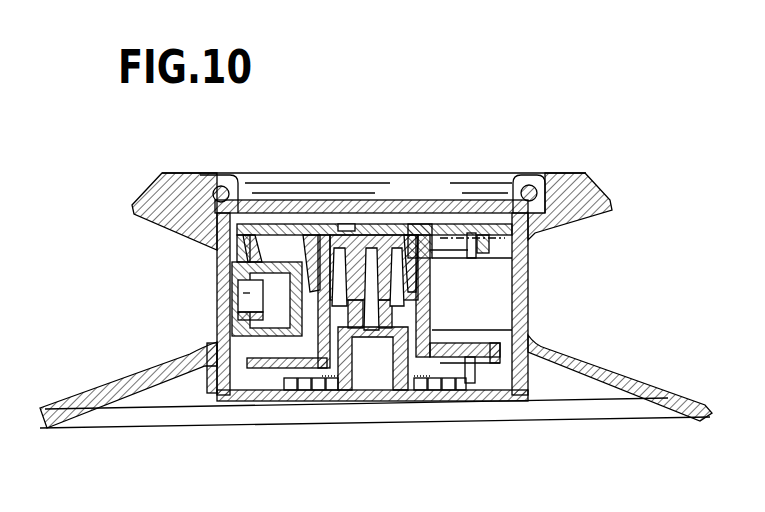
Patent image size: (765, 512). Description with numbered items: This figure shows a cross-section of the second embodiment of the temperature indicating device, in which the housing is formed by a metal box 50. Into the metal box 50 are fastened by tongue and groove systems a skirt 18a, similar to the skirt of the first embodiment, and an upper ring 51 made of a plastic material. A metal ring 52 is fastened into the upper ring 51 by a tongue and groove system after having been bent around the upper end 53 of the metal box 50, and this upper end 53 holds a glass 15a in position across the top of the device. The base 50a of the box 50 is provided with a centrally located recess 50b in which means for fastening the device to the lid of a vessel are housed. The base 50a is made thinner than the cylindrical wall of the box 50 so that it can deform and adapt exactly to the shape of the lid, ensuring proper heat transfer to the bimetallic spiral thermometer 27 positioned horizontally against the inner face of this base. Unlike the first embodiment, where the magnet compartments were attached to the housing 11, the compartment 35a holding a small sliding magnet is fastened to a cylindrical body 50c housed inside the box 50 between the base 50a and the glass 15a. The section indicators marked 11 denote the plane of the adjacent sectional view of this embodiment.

The housing 11 is at (210, 279).
The glass 15a is at (431, 200).
The skirt 18a is at (619, 378).
The bimetallic spiral thermometer 27 is at (293, 392).
The compartment 35a is at (263, 337).
The metal box 50 is at (520, 268).
The base of the box 50a is at (470, 400).
The centrally located recess 50b is at (375, 385).
The cylindrical body 50c is at (511, 290).
The upper ring 51 is at (590, 195).
The metal ring 52 is at (548, 178).
The upper end of the metal box 53 is at (204, 176).